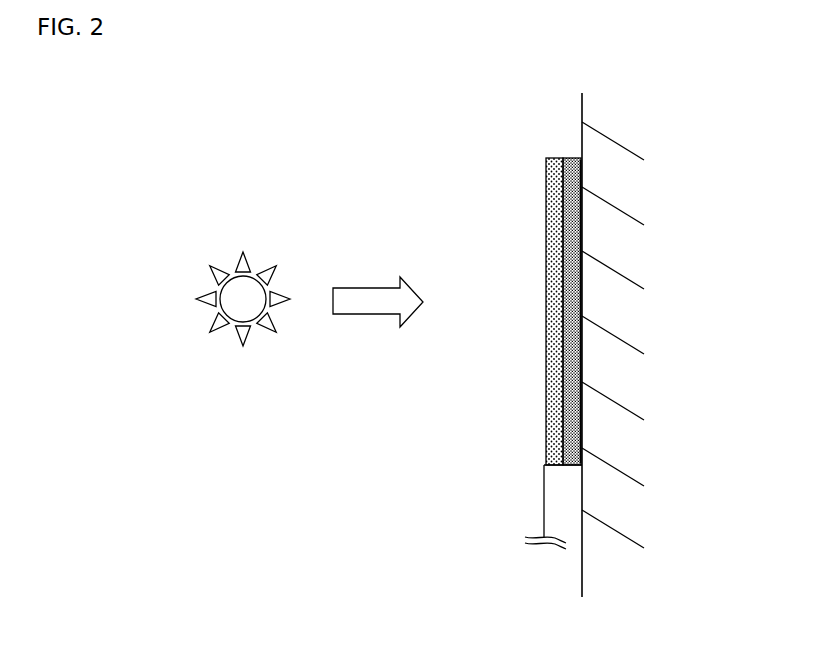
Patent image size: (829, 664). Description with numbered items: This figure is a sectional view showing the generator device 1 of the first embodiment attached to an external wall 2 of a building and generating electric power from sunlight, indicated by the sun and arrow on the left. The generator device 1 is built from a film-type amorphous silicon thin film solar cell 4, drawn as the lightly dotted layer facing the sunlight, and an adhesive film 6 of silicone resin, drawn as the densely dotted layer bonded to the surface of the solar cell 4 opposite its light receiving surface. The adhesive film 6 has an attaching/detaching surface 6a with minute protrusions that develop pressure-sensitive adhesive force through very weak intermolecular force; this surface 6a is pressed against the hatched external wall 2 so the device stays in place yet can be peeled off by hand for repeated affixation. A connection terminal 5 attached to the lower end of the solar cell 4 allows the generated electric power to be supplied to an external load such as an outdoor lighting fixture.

The generator device 1 is at (580, 317).
The external wall 2 is at (593, 563).
The solar cell 4 is at (550, 208).
The connection terminal 5 is at (542, 505).
The adhesive film 6 is at (573, 157).
The attaching/detaching surface 6a is at (582, 178).